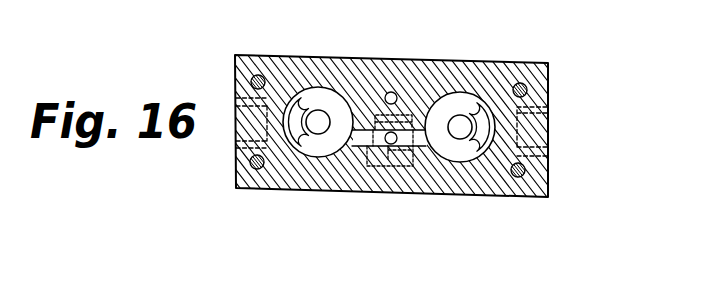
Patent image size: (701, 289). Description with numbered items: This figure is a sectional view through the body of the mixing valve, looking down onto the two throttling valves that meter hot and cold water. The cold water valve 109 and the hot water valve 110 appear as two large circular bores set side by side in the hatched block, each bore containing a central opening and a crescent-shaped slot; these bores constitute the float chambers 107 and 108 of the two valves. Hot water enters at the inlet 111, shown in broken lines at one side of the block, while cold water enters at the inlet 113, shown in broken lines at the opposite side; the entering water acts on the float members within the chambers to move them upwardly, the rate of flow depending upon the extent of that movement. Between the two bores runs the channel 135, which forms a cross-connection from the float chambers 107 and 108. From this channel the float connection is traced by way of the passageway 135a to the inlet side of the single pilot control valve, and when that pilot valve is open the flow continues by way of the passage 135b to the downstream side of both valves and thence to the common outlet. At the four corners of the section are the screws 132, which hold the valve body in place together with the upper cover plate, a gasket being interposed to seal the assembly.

The float chamber 107 is at (323, 94).
The float chamber 108 is at (445, 104).
The cold water valve 109 is at (318, 131).
The hot water valve 110 is at (460, 137).
The inlet 111 is at (240, 107).
The cold water inlet 113 is at (550, 127).
The screws 132 is at (251, 163).
The channel 135 is at (358, 141).
The passageway 135a is at (390, 145).
The passage 135b is at (390, 92).